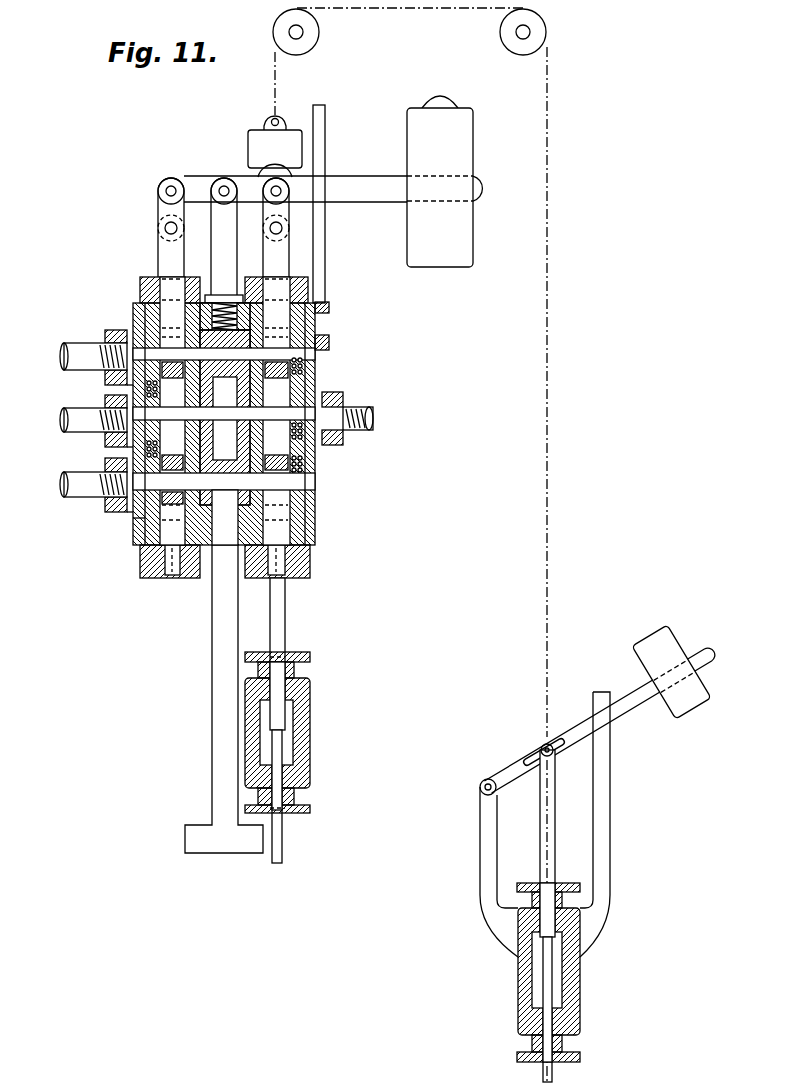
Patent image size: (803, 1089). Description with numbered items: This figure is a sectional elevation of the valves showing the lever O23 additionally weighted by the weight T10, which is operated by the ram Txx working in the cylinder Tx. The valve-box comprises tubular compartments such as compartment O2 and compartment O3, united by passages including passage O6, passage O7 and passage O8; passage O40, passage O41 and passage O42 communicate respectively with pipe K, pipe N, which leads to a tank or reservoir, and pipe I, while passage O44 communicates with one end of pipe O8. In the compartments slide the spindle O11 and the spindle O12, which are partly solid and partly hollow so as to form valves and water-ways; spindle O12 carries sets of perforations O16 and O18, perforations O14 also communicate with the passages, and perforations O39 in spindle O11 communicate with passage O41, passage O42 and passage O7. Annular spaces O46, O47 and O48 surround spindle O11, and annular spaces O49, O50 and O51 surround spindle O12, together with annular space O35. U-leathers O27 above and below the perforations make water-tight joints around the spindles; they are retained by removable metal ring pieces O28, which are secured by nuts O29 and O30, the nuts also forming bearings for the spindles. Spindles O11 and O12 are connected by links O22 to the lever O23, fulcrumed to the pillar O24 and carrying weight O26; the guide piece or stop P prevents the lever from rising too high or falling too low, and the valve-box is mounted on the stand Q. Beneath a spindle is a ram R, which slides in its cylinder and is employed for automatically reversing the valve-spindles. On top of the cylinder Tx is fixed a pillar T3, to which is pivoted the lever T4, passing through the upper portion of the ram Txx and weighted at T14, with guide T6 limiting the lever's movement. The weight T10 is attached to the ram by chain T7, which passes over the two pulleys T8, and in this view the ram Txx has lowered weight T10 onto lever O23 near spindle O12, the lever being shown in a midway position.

The chain T7 is at (549, 462).
The pulleys T8 is at (318, 36).
The weight T10 is at (275, 146).
The guide piece or stop P is at (326, 128).
The weight O26 is at (444, 181).
The lever O23 is at (295, 187).
The links O22 is at (335, 212).
The spindle O11 is at (175, 227).
The pillar O24 is at (224, 240).
The spindle O12 is at (280, 227).
The compartment O2 is at (134, 306).
The nuts O29 is at (148, 277).
The nuts O30 is at (325, 560).
The passage O6 is at (225, 358).
The annular space O46 is at (205, 316).
The perforations O16 is at (280, 411).
The annular space O35 is at (174, 411).
The removable metal ring pieces O28 is at (316, 356).
The passage O44 is at (316, 400).
The annular space O49 is at (316, 488).
The perforations O14 is at (275, 348).
The perforations O18 is at (285, 453).
The perforations O39 is at (175, 496).
The passage O7 is at (225, 482).
The compartment O3 is at (316, 306).
The annular space O51 is at (318, 336).
The U-leathers or packings O27 is at (316, 511).
The passage O40 is at (133, 341).
The pipe K is at (93, 357).
The passage O41 is at (131, 393).
The pipe N is at (93, 421).
The annular space O47 is at (131, 456).
The pipe I is at (93, 485).
The passage O42 is at (131, 519).
The annular space O48 is at (135, 521).
The passage (pipe) O8 is at (355, 416).
The annular space O50 is at (341, 441).
The stand Q is at (224, 699).
The ram R is at (279, 615).
The pillar T3 is at (481, 847).
The guide T6 is at (599, 868).
The lever T4 is at (575, 726).
The weight T14 is at (648, 646).
The ram Txx is at (540, 861).
The cylinder Tx is at (518, 990).